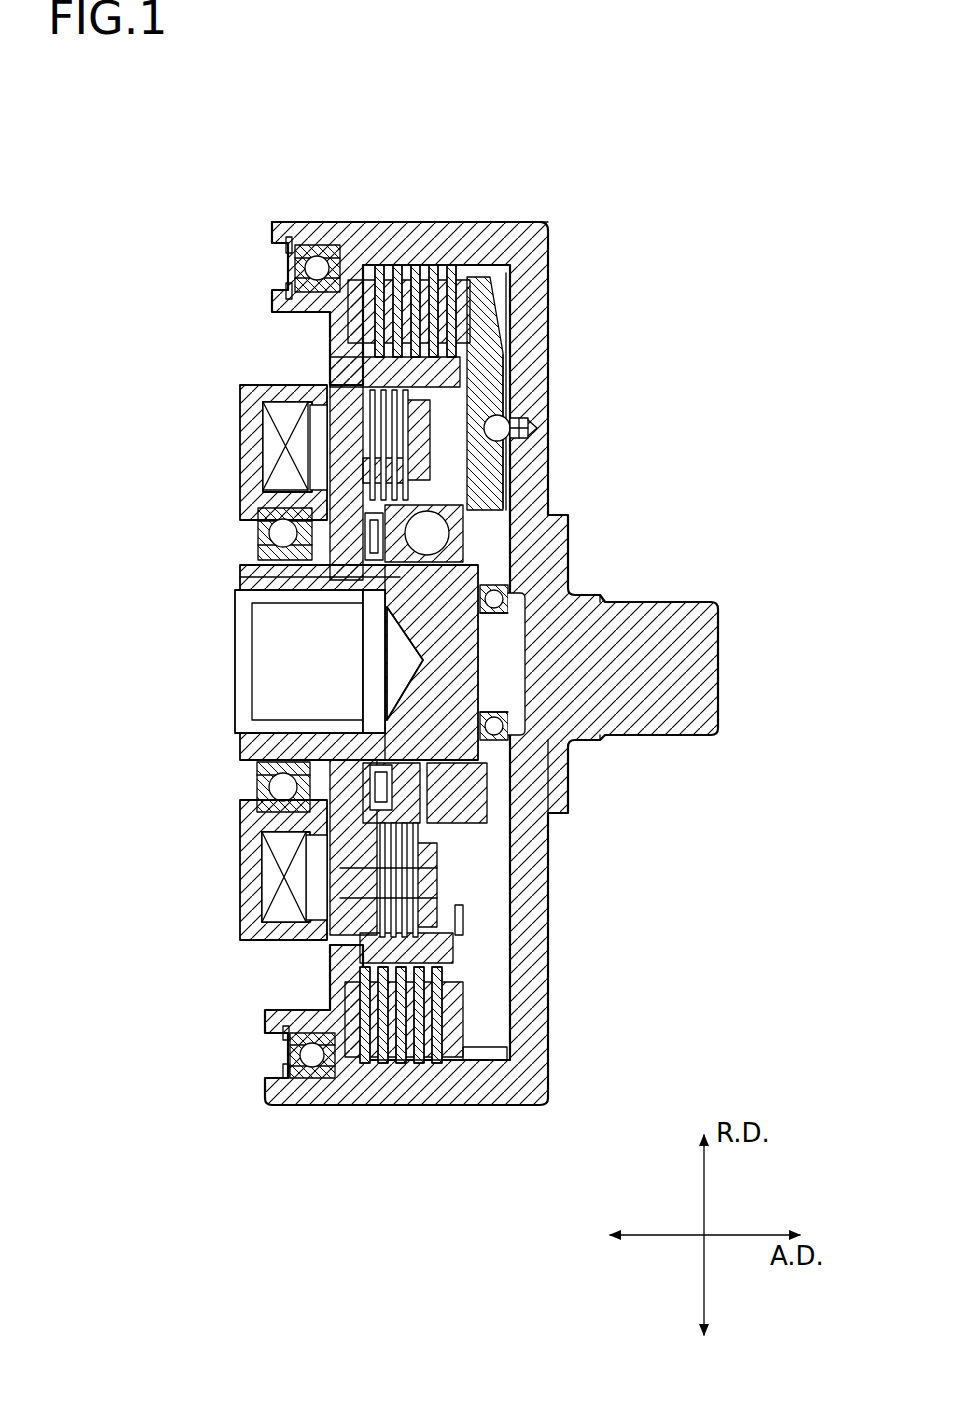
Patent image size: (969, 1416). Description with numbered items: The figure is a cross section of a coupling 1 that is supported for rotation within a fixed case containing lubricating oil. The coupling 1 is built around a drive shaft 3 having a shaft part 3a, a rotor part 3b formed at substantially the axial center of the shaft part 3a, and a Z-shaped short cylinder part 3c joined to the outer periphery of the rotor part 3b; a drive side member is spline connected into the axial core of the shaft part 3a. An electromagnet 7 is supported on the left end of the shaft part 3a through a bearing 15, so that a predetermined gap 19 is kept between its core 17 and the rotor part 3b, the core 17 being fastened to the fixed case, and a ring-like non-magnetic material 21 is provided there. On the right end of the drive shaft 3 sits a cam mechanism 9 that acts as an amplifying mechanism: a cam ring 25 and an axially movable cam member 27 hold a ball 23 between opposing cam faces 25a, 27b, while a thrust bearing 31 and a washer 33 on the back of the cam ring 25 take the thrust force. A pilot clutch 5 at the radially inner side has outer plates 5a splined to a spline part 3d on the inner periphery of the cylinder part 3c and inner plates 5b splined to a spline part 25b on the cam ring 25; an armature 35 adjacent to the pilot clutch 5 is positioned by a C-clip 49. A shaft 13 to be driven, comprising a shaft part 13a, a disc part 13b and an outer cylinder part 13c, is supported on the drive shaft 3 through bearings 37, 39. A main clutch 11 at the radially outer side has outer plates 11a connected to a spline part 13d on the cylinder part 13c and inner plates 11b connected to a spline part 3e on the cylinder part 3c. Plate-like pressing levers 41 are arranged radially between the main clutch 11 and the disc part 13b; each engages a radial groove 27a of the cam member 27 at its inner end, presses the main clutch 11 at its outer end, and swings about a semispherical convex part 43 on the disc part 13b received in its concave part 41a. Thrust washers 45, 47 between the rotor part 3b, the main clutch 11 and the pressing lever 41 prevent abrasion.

The coupling 1 is at (185, 195).
The drive shaft 3 is at (236, 578).
The shaft part 3a is at (276, 582).
The rotor part 3b is at (350, 591).
The cylinder part 3c is at (355, 390).
The spline part 3d is at (505, 380).
The spline part 3e is at (510, 355).
The pilot clutch 5 is at (278, 355).
The outer plates 5a is at (330, 378).
The inner plates 5b is at (360, 498).
The electromagnet 7 is at (228, 405).
The cam mechanism 9 is at (395, 607).
The main clutch 11 is at (437, 240).
The outer plates 11a is at (463, 262).
The inner plates 11b is at (506, 282).
The shaft to be driven 13 is at (578, 562).
The shaft part 13a is at (680, 640).
The disc part 13b is at (540, 240).
The outer cylinder part 13c is at (367, 227).
The spline part 13d is at (347, 225).
The bearing 15 is at (262, 530).
The core 17 is at (242, 437).
The gap 19 is at (330, 847).
The non-magnetic material 21 is at (330, 876).
The ball 23 is at (413, 575).
The cam ring 25 is at (368, 595).
The cam face 25a is at (420, 520).
The spline part 25b is at (455, 500).
The cam member 27 is at (482, 780).
The radial grooves 27a is at (495, 585).
The cam face 27b is at (470, 565).
The thrust bearing 31 is at (460, 790).
The washer 33 is at (242, 736).
The armature 35 is at (430, 866).
The bearing 37 is at (523, 735).
The bearing 39 is at (292, 1095).
The pressing lever 41 is at (500, 340).
The concave part 41a is at (505, 425).
The convex part 43 is at (536, 428).
The thrust washer 45 is at (348, 1065).
The thrust washer 47 is at (452, 1085).
The C-clip 49 is at (460, 925).